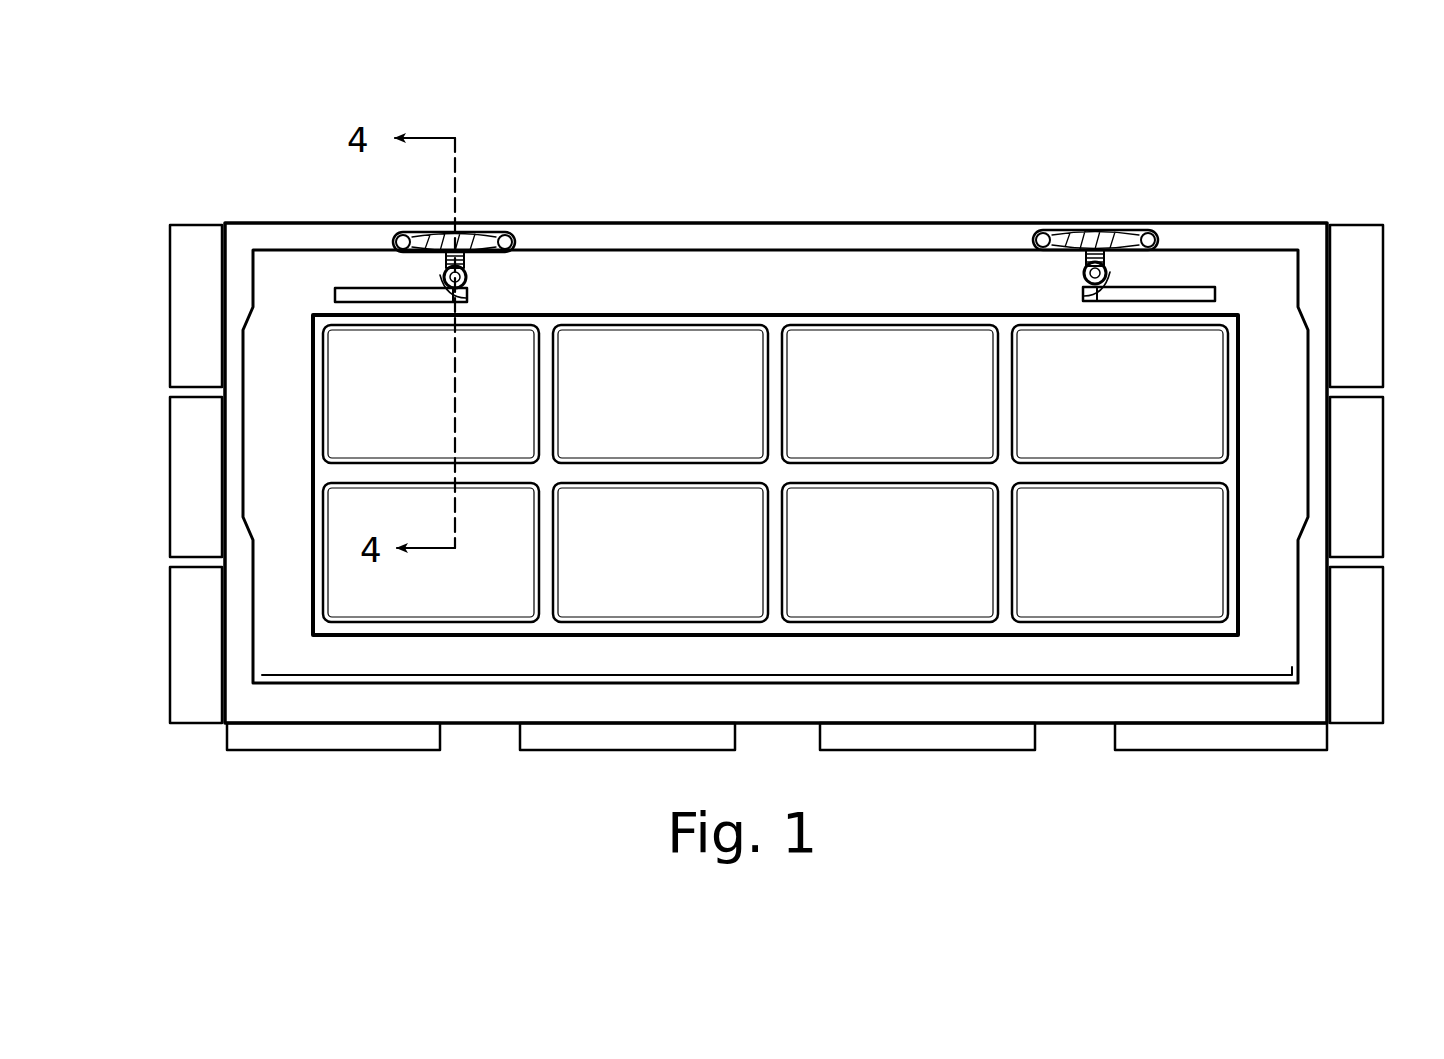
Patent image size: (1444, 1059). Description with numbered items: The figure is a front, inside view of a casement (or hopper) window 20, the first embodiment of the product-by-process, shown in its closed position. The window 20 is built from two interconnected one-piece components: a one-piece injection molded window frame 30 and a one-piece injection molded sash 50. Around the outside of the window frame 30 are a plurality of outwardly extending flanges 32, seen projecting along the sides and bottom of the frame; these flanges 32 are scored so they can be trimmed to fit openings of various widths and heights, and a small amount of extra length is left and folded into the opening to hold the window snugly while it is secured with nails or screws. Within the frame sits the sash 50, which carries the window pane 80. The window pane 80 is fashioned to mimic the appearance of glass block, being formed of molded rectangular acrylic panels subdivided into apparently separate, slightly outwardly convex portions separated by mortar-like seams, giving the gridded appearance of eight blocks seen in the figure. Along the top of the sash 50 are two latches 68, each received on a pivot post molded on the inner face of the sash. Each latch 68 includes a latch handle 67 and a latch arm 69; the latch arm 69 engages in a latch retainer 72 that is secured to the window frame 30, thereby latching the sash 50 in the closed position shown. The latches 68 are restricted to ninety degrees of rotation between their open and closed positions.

The window 20 is at (859, 143).
The window frame 30 is at (1216, 221).
The flanges 32 is at (168, 362).
The sash 50 is at (1302, 305).
The latch handle 67 is at (357, 288).
The latch 68 is at (476, 290).
The latch arm 69 is at (433, 267).
The latch retainer 72 is at (477, 228).
The window pane 80 is at (679, 353).